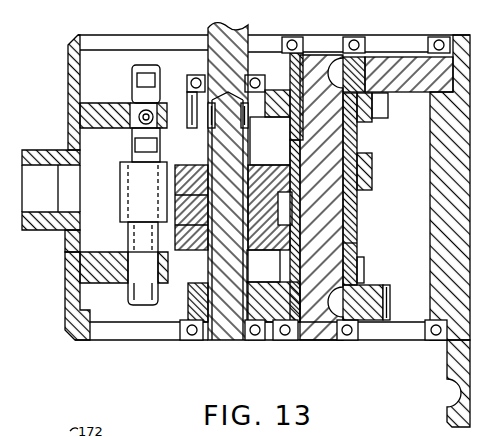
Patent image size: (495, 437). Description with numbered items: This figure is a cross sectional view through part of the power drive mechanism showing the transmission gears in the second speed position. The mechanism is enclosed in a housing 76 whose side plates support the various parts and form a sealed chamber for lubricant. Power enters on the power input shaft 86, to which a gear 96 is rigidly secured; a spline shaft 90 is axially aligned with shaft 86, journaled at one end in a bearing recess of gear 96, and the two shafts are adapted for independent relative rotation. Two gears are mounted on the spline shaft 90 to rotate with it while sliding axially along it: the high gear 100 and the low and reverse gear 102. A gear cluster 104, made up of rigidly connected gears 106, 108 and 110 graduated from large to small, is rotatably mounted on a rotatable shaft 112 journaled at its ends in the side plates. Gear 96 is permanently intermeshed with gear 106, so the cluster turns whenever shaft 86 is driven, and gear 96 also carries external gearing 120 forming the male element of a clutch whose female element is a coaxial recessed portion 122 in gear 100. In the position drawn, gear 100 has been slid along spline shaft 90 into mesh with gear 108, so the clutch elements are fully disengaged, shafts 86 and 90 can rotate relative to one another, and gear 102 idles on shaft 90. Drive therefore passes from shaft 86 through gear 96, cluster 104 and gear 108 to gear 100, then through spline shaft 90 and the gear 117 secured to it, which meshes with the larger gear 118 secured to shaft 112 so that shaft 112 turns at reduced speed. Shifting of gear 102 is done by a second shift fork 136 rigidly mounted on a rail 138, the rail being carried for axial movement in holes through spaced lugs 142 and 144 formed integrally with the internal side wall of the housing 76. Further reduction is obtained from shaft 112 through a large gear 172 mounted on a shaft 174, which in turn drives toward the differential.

The housing 76 is at (68, 315).
The power input shaft 86 is at (210, 26).
The spline shaft 90 is at (216, 264).
The gear 96 is at (280, 132).
The high gear 100 is at (282, 166).
The low and reverse gear 102 is at (277, 254).
The gear cluster 104 is at (357, 231).
The gear 106 is at (372, 122).
The gear 108 is at (372, 183).
The gear 110 is at (364, 270).
The rotatable shaft 112 is at (358, 243).
The gear 117 is at (190, 311).
The gear 118 is at (390, 298).
The external gearing 120 is at (197, 128).
The recessed portion 122 is at (196, 167).
The second shift fork 136 is at (125, 222).
The rail 138 is at (128, 297).
The lug 142 is at (80, 270).
The lug 144 is at (121, 113).
The large gear 172 is at (387, 94).
The shaft 174 is at (430, 160).